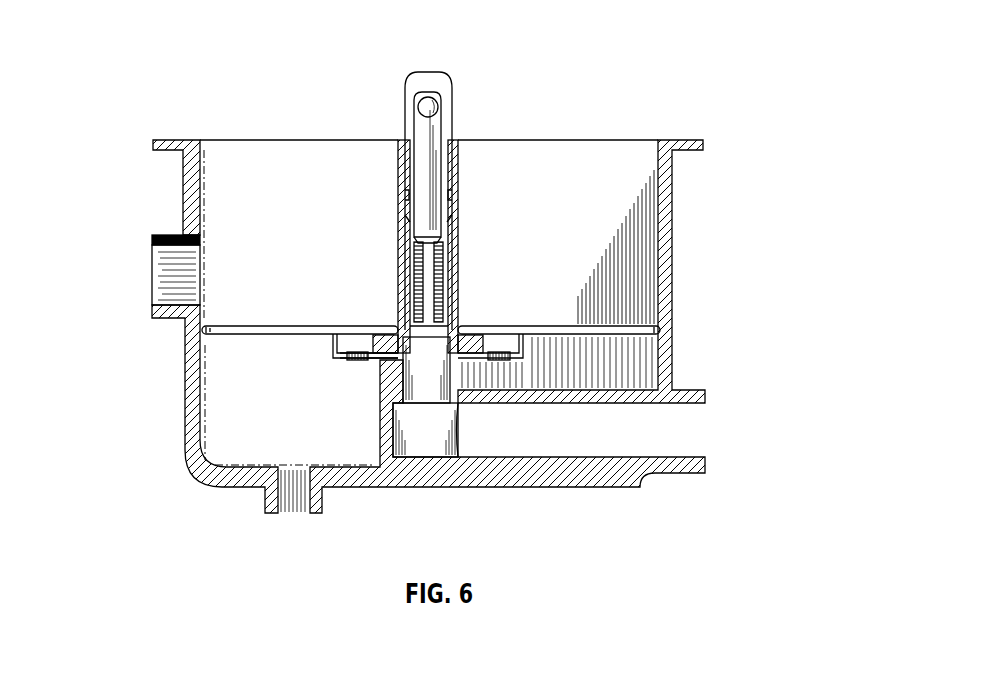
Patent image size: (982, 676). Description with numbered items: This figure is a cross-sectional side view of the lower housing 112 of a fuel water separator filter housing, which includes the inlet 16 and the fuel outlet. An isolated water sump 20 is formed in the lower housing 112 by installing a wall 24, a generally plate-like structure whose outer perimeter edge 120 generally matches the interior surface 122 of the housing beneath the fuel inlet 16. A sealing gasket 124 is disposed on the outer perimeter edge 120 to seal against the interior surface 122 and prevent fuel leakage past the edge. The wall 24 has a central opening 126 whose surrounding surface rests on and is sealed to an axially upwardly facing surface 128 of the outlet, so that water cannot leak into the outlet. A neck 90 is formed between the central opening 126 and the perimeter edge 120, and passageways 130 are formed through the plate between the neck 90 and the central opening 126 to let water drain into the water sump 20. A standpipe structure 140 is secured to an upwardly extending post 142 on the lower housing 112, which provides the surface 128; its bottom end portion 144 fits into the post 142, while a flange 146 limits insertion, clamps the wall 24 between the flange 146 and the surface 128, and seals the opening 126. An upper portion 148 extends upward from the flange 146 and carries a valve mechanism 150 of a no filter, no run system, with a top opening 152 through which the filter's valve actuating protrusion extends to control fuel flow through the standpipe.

The inlet 16 is at (168, 240).
The isolated water sump 20 is at (215, 464).
The wall 24 is at (236, 336).
The neck 90 is at (332, 350).
The lower housing 112 is at (689, 244).
The outer perimeter edge 120 is at (644, 320).
The interior surface 122 is at (190, 393).
The sealing gasket 124 is at (196, 331).
The central opening 126 is at (463, 365).
The axially upwardly facing surface 128 is at (375, 359).
The passageways 130 is at (355, 359).
The standpipe structure 140 is at (463, 242).
The upwardly extending post 142 is at (477, 378).
The bottom end portion 144 is at (418, 425).
The flange 146 is at (462, 340).
The upper portion 148 is at (404, 278).
The valve mechanism 150 is at (458, 132).
The top opening 152 is at (433, 75).